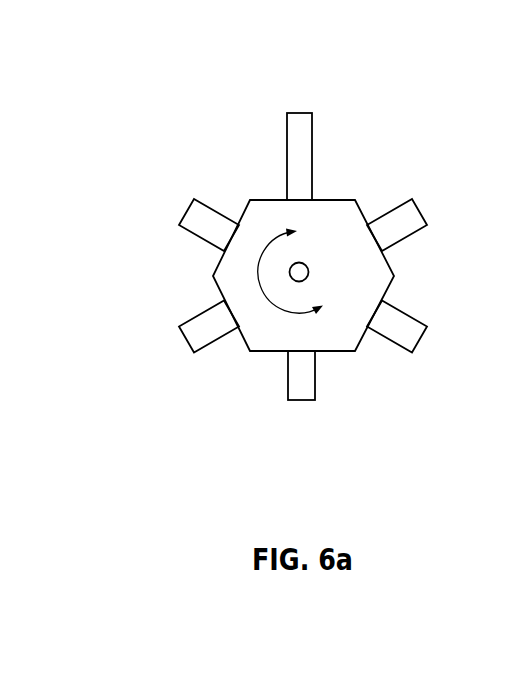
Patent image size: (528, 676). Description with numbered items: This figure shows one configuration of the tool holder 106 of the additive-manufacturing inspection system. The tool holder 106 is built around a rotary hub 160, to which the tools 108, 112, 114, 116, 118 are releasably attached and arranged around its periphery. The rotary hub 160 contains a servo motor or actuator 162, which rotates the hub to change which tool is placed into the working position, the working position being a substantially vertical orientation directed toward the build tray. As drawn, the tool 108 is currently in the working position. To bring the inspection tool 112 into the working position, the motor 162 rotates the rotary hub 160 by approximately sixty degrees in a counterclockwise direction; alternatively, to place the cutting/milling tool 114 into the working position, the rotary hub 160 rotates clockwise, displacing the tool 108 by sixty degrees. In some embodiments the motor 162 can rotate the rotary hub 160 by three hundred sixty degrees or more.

The tool holder 106 is at (197, 103).
The tool 108 is at (318, 373).
The inspection tool 112 is at (178, 333).
The cutting/milling tool 114 is at (432, 336).
The tool 116 is at (425, 217).
The tool 118 is at (178, 218).
The rotary hub 160 is at (226, 279).
The servo motor or actuator 162 is at (300, 262).